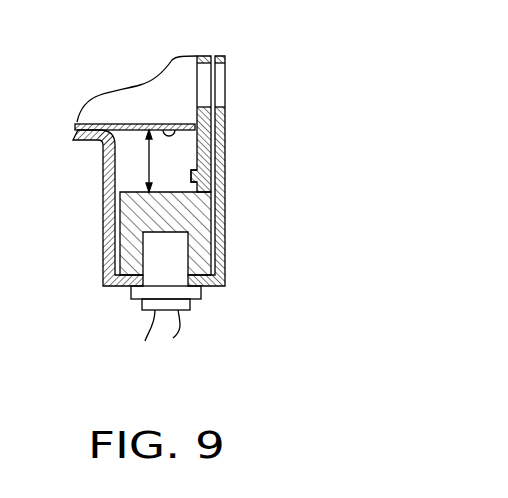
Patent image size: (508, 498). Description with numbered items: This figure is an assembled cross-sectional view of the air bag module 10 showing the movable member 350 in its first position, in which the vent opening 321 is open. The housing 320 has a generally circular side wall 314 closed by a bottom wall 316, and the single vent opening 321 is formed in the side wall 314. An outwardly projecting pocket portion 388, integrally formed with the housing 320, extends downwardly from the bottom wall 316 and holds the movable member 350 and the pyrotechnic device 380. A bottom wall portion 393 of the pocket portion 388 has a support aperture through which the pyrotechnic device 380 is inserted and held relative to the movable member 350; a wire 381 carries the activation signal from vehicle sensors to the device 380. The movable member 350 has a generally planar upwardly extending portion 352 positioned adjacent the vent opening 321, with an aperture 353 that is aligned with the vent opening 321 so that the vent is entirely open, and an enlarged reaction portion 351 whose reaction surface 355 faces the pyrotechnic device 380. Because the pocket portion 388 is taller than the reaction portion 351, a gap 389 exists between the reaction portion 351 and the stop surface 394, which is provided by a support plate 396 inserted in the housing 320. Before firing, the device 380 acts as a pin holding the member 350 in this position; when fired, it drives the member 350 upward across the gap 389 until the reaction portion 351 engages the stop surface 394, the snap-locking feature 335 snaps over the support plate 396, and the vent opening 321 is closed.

The golf club head 10 is at (7, 393).
The side wall 314 is at (223, 56).
The bottom wall 316 is at (75, 136).
The housing 320 is at (230, 252).
The vent opening 321 is at (221, 107).
The snap-locking feature 335 is at (205, 178).
The movable member 350 is at (208, 212).
The reaction portion 351 is at (130, 263).
The upwardly extending portion 352 is at (205, 135).
The aperture 353 is at (214, 69).
The reaction surface 355 is at (177, 233).
The pyrotechnic device 380 is at (178, 293).
The wire 381 is at (180, 325).
The pocket portion 388 is at (100, 188).
The gap 389 is at (146, 174).
The bottom wall portion 393 is at (220, 286).
The stop surface 394 is at (167, 124).
The support plate 396 is at (120, 123).